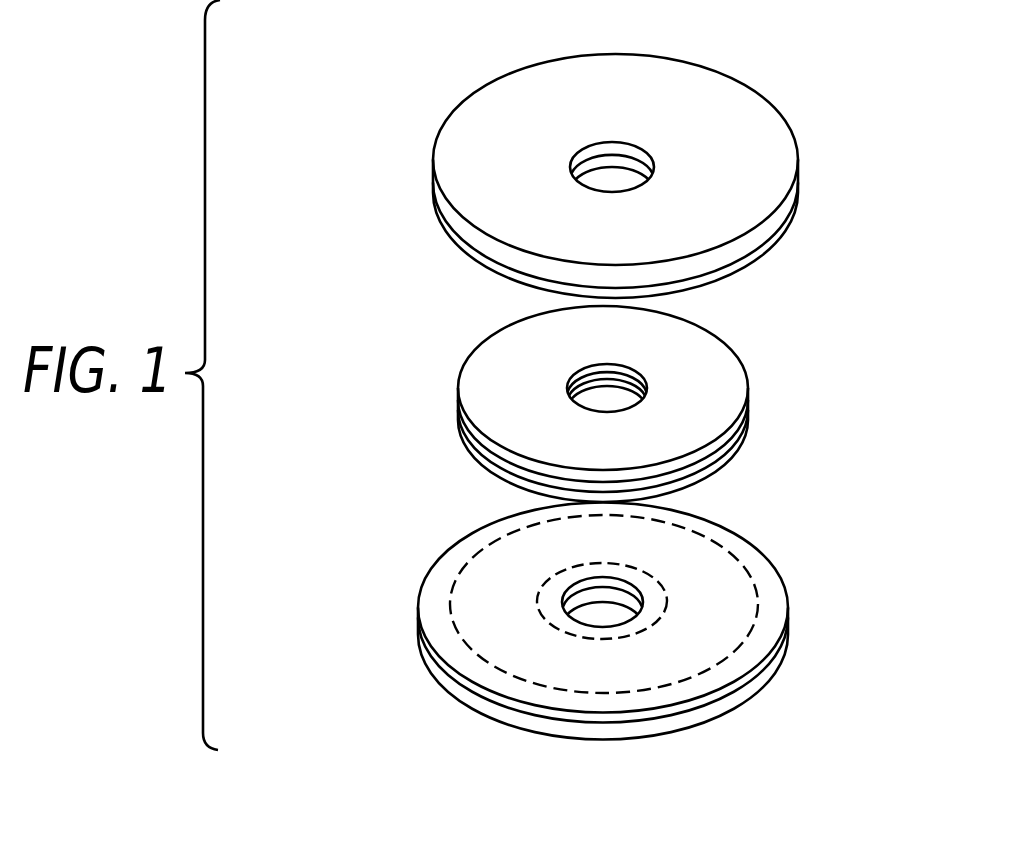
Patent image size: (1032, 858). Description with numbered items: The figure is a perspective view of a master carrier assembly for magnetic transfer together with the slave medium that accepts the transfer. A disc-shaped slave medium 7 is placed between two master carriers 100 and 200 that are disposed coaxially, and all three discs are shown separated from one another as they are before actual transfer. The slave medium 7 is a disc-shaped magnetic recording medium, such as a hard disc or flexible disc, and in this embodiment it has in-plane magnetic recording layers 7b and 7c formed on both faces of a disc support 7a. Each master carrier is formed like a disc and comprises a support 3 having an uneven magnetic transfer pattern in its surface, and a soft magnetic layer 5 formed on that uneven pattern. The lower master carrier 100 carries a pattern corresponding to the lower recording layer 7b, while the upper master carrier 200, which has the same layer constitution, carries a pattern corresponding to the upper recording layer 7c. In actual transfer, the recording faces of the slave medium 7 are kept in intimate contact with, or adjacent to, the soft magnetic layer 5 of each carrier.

The master carrier 200 is at (812, 154).
The master carrier 100 is at (804, 609).
The slave medium 7 is at (607, 404).
The disc support 7a is at (486, 453).
The lower recording layer 7b is at (500, 482).
The upper recording layer 7c is at (466, 428).
The support 3 is at (438, 198).
The soft magnetic layer 5 is at (452, 238).